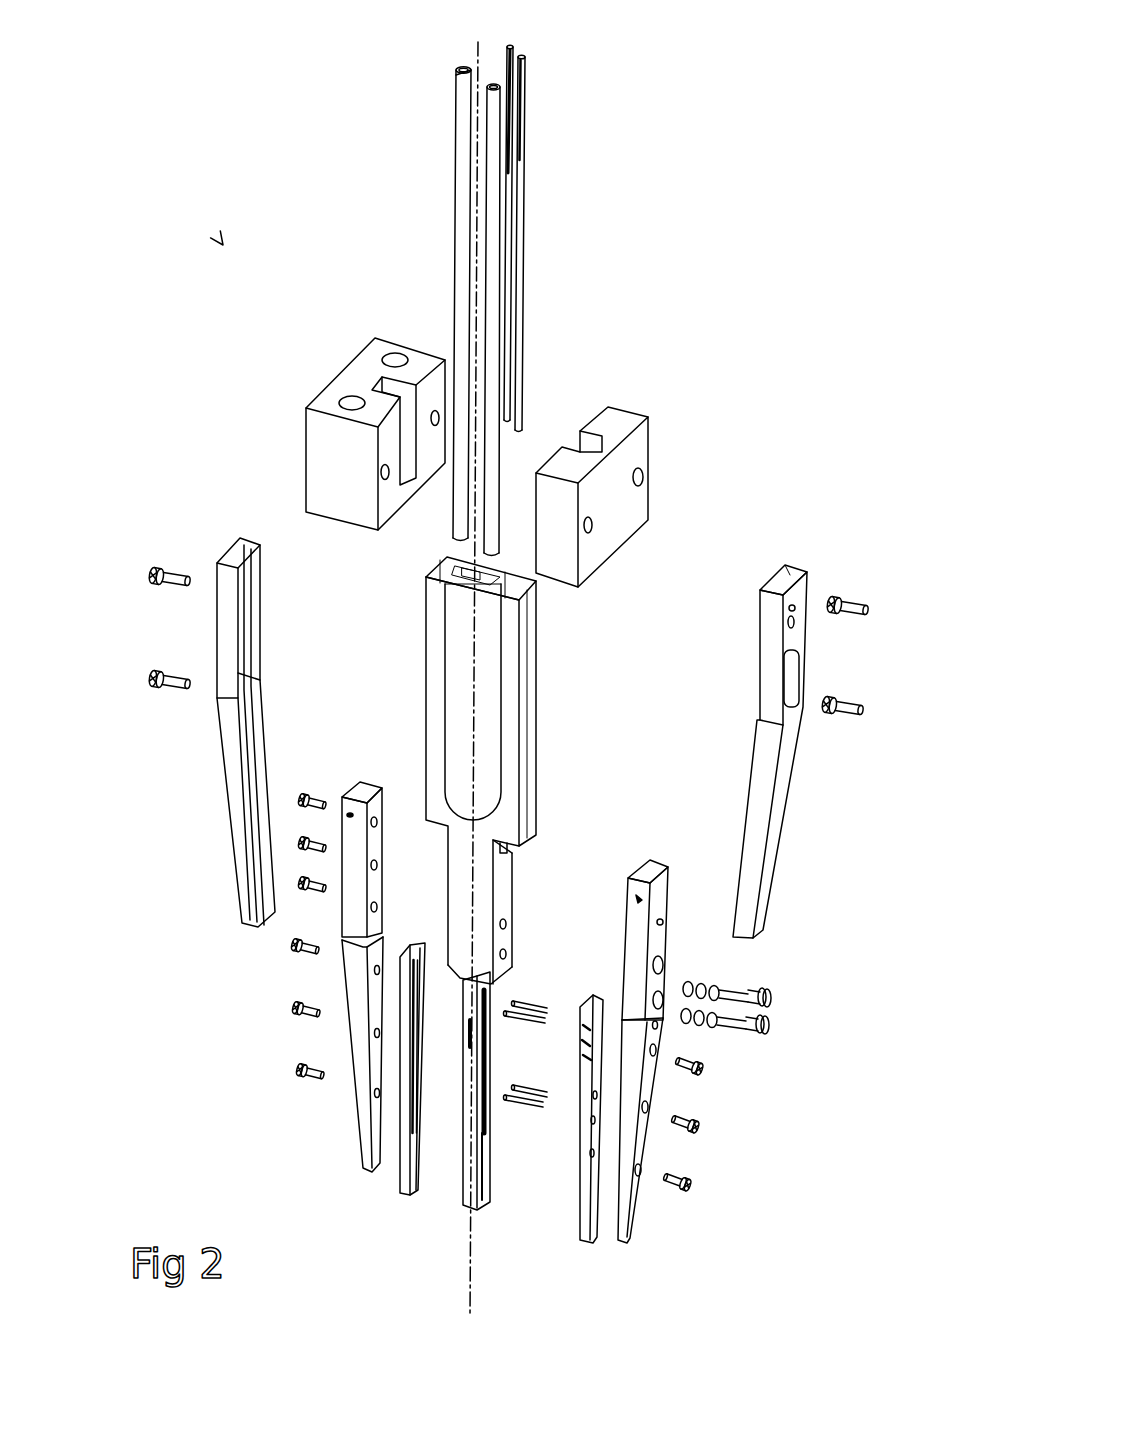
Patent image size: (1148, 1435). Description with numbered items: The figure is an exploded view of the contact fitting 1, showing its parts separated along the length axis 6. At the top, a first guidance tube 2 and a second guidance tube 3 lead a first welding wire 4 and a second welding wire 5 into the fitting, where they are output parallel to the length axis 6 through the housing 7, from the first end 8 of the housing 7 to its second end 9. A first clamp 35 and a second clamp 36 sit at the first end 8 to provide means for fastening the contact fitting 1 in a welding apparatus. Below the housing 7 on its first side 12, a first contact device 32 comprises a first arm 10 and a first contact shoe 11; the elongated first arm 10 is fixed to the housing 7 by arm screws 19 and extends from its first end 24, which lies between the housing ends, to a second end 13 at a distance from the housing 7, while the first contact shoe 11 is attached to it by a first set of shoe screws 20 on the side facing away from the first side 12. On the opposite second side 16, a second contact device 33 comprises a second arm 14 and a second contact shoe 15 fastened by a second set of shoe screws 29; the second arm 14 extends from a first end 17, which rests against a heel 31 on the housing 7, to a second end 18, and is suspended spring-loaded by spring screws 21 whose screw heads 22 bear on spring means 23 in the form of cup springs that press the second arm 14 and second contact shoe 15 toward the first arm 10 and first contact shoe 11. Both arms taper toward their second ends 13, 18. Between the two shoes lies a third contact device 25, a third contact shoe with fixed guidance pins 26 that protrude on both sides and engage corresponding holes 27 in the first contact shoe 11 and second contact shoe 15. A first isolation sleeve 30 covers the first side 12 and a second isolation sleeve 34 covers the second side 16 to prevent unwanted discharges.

The contact fitting 1 is at (223, 245).
The first guidance tube 2 is at (462, 183).
The second guidance tube 3 is at (490, 223).
The first welding wire 4 is at (508, 71).
The second welding wire 5 is at (520, 105).
The length axis 6 is at (473, 52).
The housing 7 is at (489, 770).
The first end of the housing 8 is at (408, 586).
The second end of the housing 9 is at (527, 941).
The first arm 10 is at (357, 793).
The first contact shoe 11 is at (400, 1163).
The first side of the housing 12 is at (427, 675).
The second end of the first arm 13 is at (350, 1167).
The second arm 14 is at (633, 1190).
The second contact shoe 15 is at (588, 1190).
The second side of the housing 16 is at (525, 719).
The first end of the second arm 17 is at (665, 850).
The second end of the second arm 18 is at (647, 1248).
The arm screws 19 is at (302, 898).
The first set of shoe screws 20 is at (302, 1077).
The spring screws 21 is at (746, 1021).
The screw heads 22 is at (766, 1020).
The spring means 23 is at (713, 1003).
The first end of the first arm 24 is at (340, 773).
The third contact device 25 is at (488, 1190).
The guidance pins 26 is at (530, 1087).
The holes 27 is at (422, 1097).
The second set of shoe screws 29 is at (688, 1175).
The first isolation sleeve 30 is at (225, 578).
The heel 31 is at (512, 853).
The first contact device 32 is at (263, 1130).
The second contact device 33 is at (750, 1041).
The second isolation sleeve 34 is at (768, 603).
The first clamp 35 is at (318, 430).
The second clamp 36 is at (640, 445).